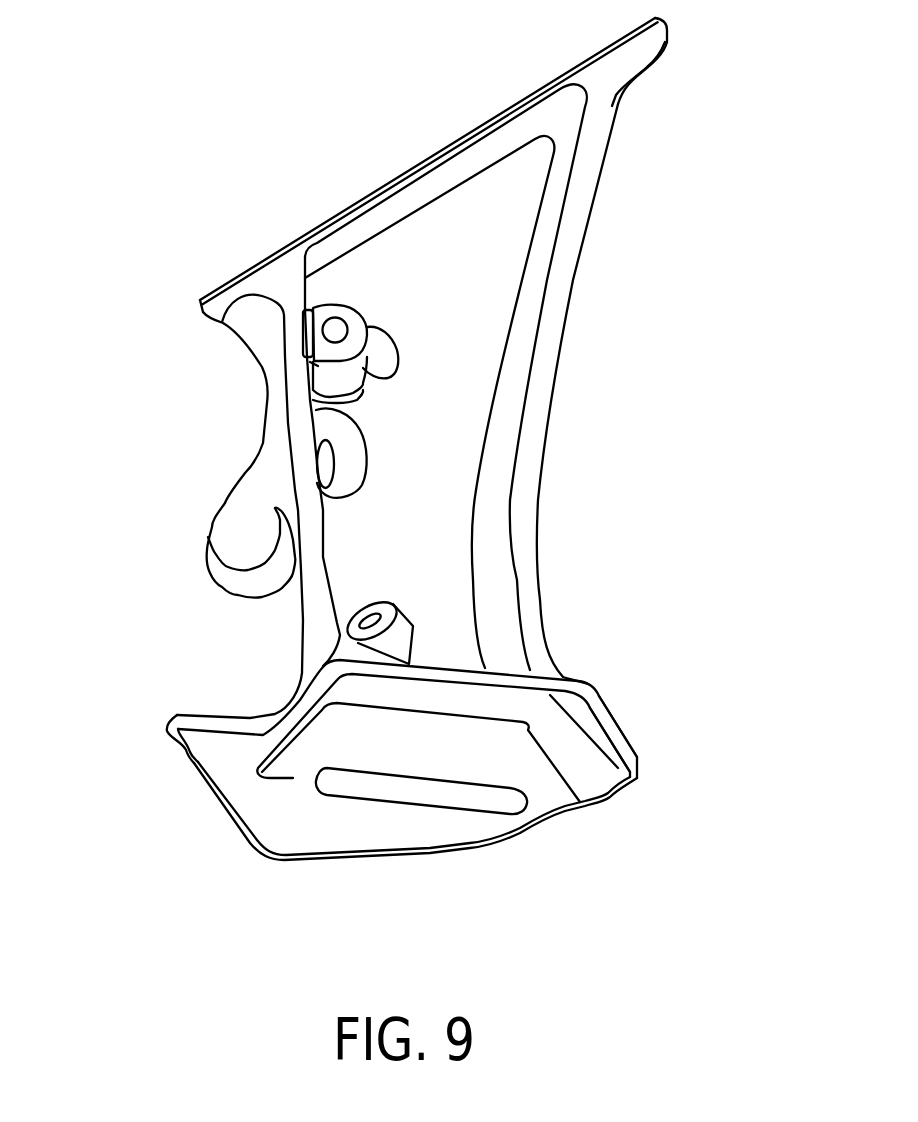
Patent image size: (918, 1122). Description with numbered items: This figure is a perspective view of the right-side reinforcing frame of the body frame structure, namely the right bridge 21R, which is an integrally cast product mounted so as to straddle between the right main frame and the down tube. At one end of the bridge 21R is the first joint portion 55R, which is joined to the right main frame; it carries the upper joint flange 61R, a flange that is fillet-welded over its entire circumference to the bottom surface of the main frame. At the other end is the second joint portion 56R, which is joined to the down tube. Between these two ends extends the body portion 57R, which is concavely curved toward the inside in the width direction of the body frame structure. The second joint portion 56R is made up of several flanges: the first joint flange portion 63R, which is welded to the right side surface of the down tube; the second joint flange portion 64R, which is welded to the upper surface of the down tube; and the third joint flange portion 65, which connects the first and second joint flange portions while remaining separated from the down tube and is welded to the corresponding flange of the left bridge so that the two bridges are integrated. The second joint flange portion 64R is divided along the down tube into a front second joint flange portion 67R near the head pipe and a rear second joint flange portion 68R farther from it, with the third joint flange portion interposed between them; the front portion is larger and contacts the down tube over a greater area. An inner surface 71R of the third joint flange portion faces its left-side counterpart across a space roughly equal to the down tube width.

The right bridge 21R is at (268, 378).
The first joint portion 55R is at (633, 70).
The second joint portion 56R is at (550, 662).
The body portion 57R is at (532, 453).
The upper joint flange 61R is at (660, 23).
The first joint flange portion 63R is at (308, 862).
The second joint flange portion 64R is at (398, 734).
The third joint flange portion 65 is at (457, 713).
The front second joint flange portion 67R is at (170, 726).
The rear second joint flange portion 68R is at (638, 760).
The surface 71R is at (405, 760).